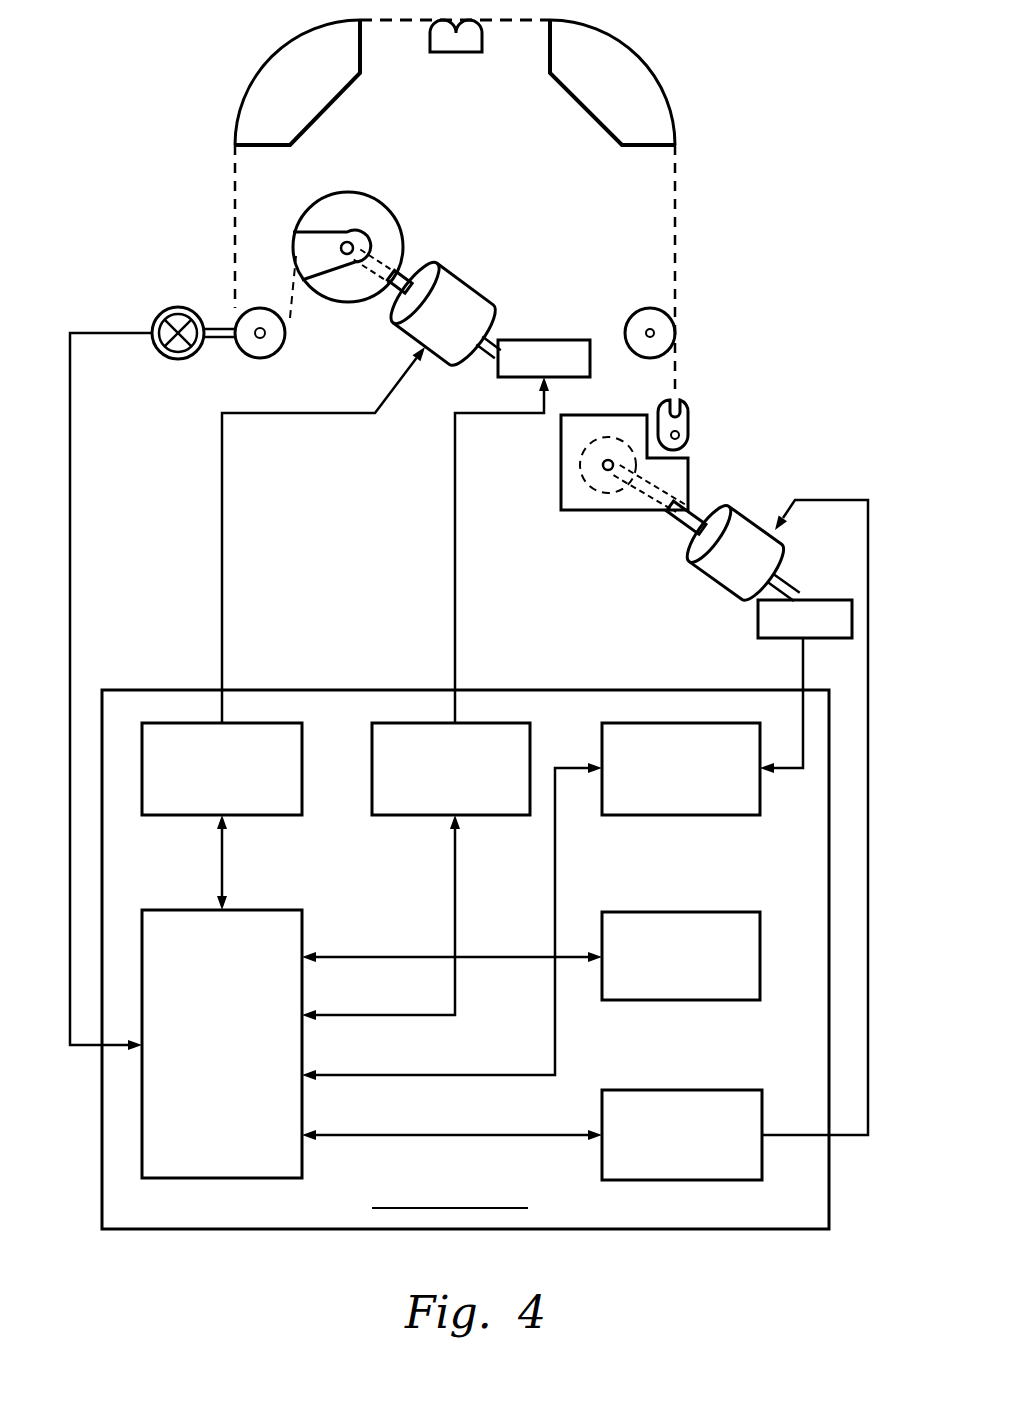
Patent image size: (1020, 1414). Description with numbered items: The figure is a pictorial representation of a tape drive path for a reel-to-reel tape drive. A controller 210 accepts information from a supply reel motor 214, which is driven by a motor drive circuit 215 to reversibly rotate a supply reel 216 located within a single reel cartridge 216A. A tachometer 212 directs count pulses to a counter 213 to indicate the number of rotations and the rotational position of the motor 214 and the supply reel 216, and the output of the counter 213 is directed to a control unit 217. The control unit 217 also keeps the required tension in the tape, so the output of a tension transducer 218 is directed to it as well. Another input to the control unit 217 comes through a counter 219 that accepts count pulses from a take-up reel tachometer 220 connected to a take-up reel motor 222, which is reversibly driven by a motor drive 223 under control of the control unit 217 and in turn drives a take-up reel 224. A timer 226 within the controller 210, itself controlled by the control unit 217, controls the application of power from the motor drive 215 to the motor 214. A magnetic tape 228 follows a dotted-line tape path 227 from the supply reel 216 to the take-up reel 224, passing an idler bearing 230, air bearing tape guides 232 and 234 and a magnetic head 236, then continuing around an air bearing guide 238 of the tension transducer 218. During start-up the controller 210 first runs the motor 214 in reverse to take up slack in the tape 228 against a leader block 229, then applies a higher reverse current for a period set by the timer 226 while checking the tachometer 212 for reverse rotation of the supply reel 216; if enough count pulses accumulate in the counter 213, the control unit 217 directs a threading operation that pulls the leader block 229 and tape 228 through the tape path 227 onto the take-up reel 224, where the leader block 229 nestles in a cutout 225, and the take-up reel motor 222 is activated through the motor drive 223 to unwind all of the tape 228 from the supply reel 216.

The controller 210 is at (647, 1210).
The tachometer 212 is at (767, 640).
The counter 213 is at (682, 815).
The supply reel motor 214 is at (703, 578).
The motor drive circuit 215 is at (737, 1090).
The supply reel 216 is at (580, 470).
The single reel cartridge 216A is at (610, 503).
The control unit 217 is at (280, 910).
The tension transducer 218 is at (178, 306).
The counter 219 is at (470, 815).
The take-up reel tachometer 220 is at (548, 340).
The take-up reel motor 222 is at (447, 284).
The motor drive 223 is at (250, 815).
The take-up reel 224 is at (372, 206).
The cutout 225 is at (308, 250).
The timer 226 is at (650, 1000).
The tape path 227 is at (675, 237).
The magnetic tape 228 is at (653, 462).
The leader block 229 is at (675, 420).
The idler bearing 230 is at (637, 310).
The air bearing tape guide 232 is at (606, 116).
The air bearing tape guide 234 is at (314, 98).
The magnetic head 236 is at (448, 45).
The air bearing guide 238 is at (258, 358).